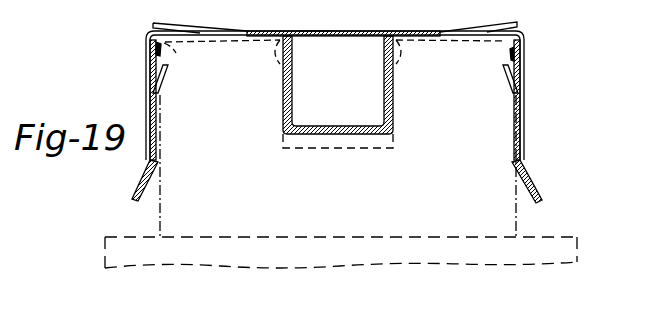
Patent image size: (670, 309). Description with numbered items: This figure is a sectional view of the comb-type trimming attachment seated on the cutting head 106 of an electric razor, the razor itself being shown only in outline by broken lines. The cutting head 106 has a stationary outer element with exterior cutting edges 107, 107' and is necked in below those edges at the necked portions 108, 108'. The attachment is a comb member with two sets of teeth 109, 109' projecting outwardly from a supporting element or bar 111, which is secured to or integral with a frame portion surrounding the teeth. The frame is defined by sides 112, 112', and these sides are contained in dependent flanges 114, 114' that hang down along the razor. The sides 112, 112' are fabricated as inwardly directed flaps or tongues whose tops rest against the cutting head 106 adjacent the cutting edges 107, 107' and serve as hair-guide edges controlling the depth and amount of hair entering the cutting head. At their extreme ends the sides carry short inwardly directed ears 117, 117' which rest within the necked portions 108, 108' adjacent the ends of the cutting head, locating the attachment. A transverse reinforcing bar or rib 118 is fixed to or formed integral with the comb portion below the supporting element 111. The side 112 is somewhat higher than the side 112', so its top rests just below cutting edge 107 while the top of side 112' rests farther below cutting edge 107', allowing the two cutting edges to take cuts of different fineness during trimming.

The cutting head 106 is at (228, 42).
The cutting edge 107 is at (222, 54).
The cutting edge 107' is at (453, 52).
The necked portion 108 is at (190, 79).
The necked portion 108' is at (485, 79).
The teeth 109 is at (200, 16).
The teeth 109' is at (473, 16).
The supporting element or bar 111 is at (326, 32).
The side 112 is at (130, 58).
The side 112' is at (540, 58).
The dependent flange 114 is at (135, 173).
The dependent flange 114' is at (540, 154).
The ear 117 is at (130, 100).
The ear 117' is at (542, 100).
The transverse reinforcing bar or rib 118 is at (283, 122).